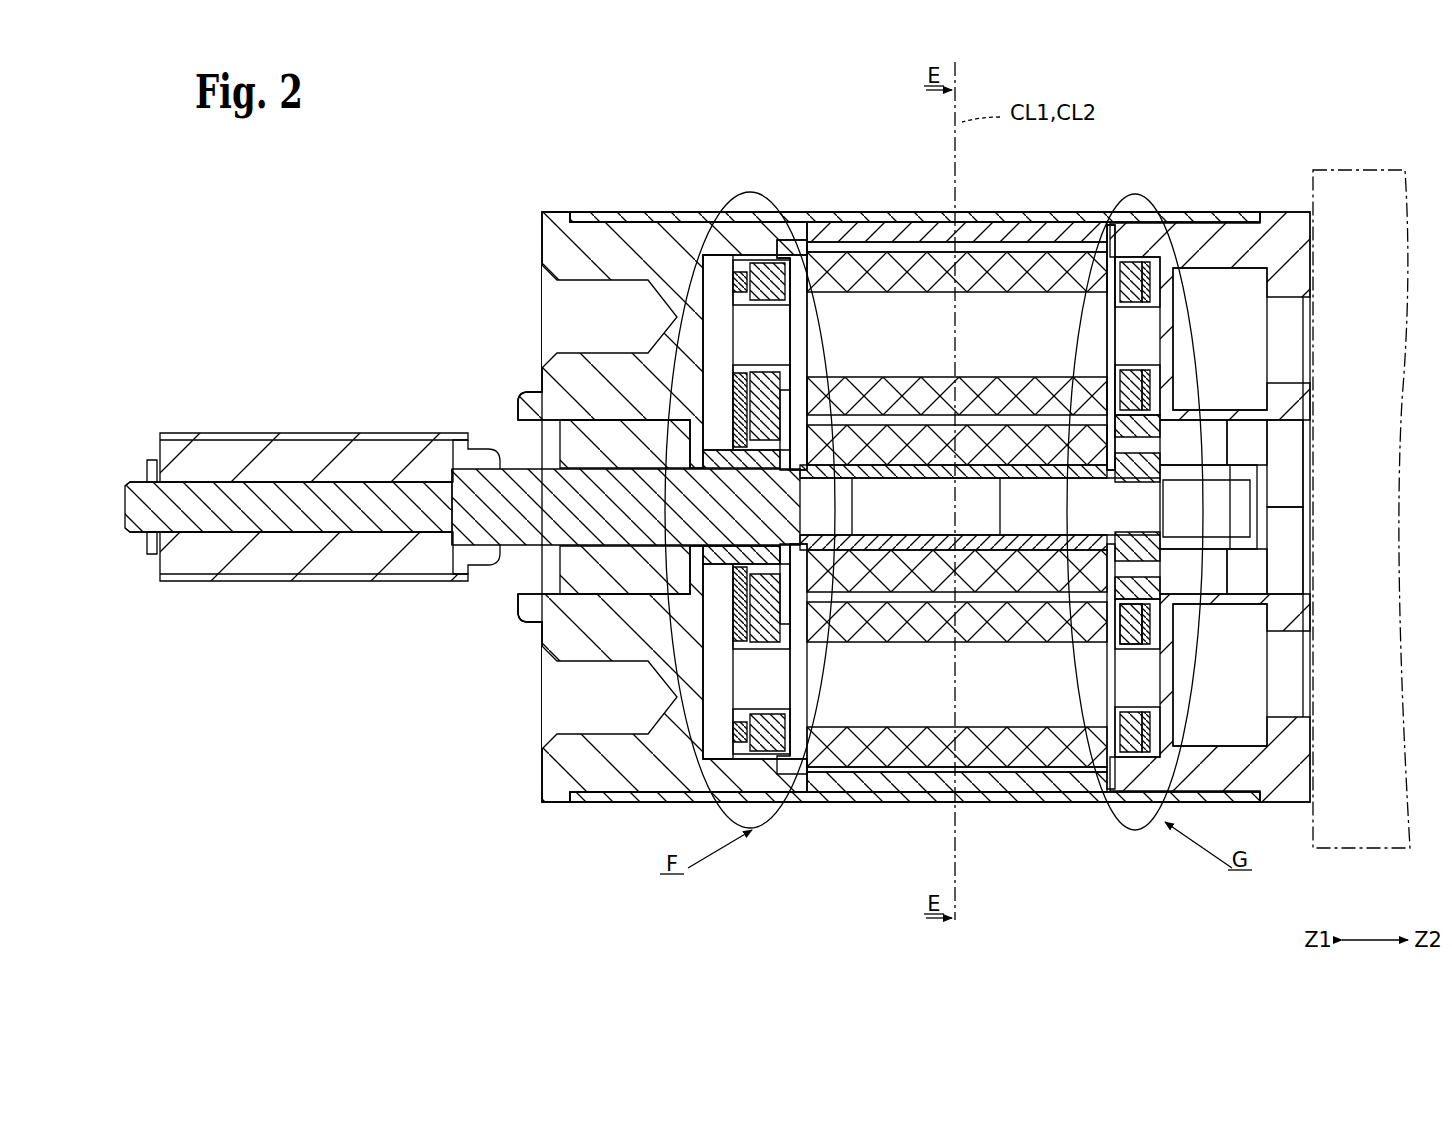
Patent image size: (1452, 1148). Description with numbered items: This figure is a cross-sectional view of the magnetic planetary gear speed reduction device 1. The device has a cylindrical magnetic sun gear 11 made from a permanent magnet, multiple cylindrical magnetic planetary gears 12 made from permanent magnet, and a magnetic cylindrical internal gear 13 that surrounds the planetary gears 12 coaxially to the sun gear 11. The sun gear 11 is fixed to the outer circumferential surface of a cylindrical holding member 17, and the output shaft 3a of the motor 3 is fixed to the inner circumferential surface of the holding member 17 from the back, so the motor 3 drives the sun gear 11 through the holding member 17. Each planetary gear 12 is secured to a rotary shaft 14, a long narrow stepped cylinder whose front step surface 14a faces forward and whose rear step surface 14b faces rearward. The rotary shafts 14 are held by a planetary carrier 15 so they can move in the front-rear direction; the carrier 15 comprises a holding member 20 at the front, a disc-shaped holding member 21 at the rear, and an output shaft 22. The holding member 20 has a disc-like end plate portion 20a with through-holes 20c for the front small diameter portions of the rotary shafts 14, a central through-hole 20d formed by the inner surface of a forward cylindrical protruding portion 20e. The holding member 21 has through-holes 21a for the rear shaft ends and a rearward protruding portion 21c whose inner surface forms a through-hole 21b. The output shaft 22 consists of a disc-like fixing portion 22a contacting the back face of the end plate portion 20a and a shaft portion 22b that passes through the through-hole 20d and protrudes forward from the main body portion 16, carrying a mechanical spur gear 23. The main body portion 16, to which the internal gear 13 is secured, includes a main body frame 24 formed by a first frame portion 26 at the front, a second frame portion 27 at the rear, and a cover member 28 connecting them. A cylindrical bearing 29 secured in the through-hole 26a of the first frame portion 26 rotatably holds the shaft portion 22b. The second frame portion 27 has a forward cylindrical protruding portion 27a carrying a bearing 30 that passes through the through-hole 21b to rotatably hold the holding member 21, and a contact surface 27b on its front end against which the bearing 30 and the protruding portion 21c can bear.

The speed reduction device 1 is at (462, 192).
The motor 3 is at (1362, 168).
The output shaft 3a is at (1000, 506).
The sun gear 11 is at (1017, 423).
The planetary gears 12 is at (966, 252).
The internal gear 13 is at (848, 222).
The rotary shafts 14 is at (1048, 380).
The step surface 14a is at (742, 372).
The step surface 14b is at (1150, 365).
The planetary carrier 15 is at (727, 255).
The main body portion 16 is at (557, 212).
The holding member 17 is at (975, 425).
The holding member 20 is at (784, 240).
The end plate portion 20a is at (942, 316).
The through-holes 20c is at (800, 318).
The through-hole 20d is at (800, 500).
The protruding portion 20e is at (700, 552).
The holding member 21 is at (1128, 262).
The through-holes 21a is at (1140, 312).
The through-hole 21b is at (1128, 548).
The protruding portion 21c is at (1150, 612).
The output shaft 22 is at (385, 482).
The fixing portion 22a is at (792, 420).
The shaft portion 22b is at (288, 461).
The gear 23 is at (246, 433).
The main body frame 24 is at (622, 212).
The first frame portion 26 is at (542, 245).
The through-hole 26a is at (518, 412).
The second frame portion 27 is at (1280, 212).
The protruding portion 27a is at (1215, 410).
The contact surface 27b is at (1160, 410).
The cover member 28 is at (915, 482).
The bearing 29 is at (558, 565).
The bearing 30 is at (1228, 427).